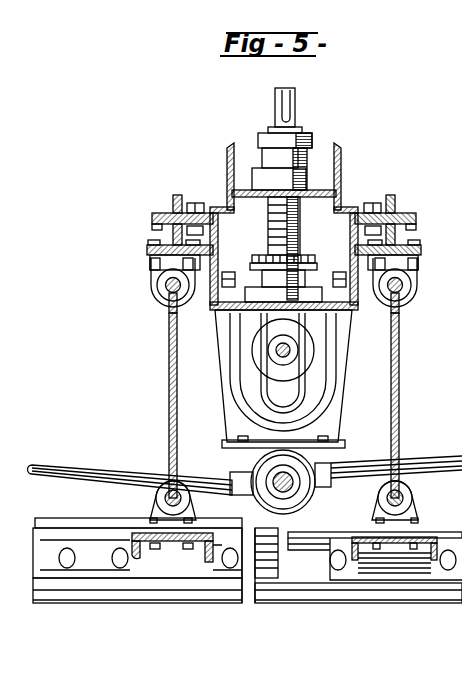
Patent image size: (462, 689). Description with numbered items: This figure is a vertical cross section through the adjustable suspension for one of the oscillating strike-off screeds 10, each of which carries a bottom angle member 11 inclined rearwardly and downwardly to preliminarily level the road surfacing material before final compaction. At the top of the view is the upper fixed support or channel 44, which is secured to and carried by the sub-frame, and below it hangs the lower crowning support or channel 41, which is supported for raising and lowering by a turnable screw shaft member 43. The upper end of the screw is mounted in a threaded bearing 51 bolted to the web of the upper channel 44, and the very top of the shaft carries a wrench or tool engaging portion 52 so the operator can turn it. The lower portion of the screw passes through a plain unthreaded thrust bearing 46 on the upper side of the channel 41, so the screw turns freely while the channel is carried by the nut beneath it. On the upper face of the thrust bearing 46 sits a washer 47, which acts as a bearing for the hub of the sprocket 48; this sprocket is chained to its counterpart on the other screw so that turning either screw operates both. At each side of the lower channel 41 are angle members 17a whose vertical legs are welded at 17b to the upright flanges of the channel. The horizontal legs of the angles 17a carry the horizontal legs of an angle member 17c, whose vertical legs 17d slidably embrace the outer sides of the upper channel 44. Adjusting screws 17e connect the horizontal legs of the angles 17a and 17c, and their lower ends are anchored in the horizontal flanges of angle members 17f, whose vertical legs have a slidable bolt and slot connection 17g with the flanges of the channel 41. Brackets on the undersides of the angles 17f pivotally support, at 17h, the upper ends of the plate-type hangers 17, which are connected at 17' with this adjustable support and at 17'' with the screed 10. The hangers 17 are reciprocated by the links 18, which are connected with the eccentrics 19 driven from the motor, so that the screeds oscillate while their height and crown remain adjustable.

The oscillating strike-off screed 10 is at (278, 585).
The bottom angle member 11 is at (196, 604).
The plate-type hanger 17 is at (283, 405).
The hanger connection to adjustable support 17' is at (279, 287).
The hanger connection to screed 17'' is at (290, 484).
The angle member 17a is at (163, 275).
The weld 17b is at (217, 246).
The angle member 17c is at (213, 197).
The vertical leg 17d is at (226, 165).
The adjusting screw 17e is at (173, 198).
The angle member 17f is at (147, 252).
The slidable bolt and slot connection 17g is at (176, 317).
The pivotal support 17h is at (157, 301).
The link 18 is at (436, 463).
The eccentric 19 is at (297, 497).
The lower crowning support channel 41 is at (210, 307).
The screw shaft member 43 is at (276, 221).
The upper fixed support channel 44 is at (339, 156).
The thrust bearing 46 is at (255, 311).
The washer 47 is at (319, 287).
The sprocket 48 is at (310, 256).
The threaded bearing 51 is at (306, 160).
The wrench engaging portion 52 is at (288, 108).